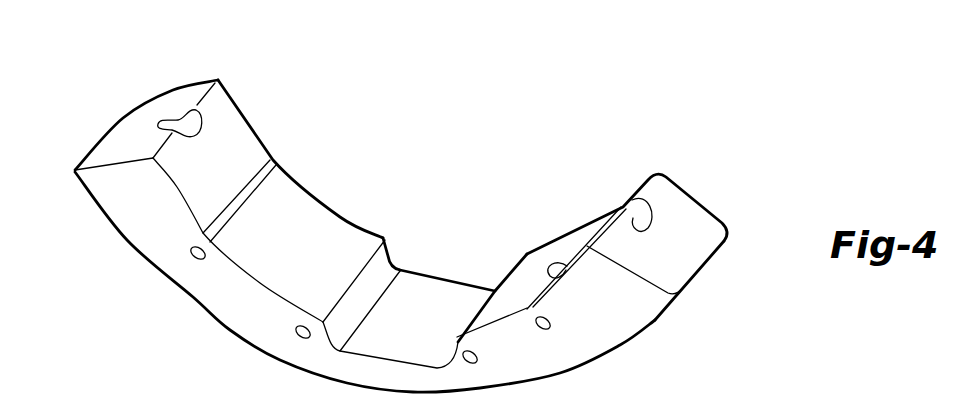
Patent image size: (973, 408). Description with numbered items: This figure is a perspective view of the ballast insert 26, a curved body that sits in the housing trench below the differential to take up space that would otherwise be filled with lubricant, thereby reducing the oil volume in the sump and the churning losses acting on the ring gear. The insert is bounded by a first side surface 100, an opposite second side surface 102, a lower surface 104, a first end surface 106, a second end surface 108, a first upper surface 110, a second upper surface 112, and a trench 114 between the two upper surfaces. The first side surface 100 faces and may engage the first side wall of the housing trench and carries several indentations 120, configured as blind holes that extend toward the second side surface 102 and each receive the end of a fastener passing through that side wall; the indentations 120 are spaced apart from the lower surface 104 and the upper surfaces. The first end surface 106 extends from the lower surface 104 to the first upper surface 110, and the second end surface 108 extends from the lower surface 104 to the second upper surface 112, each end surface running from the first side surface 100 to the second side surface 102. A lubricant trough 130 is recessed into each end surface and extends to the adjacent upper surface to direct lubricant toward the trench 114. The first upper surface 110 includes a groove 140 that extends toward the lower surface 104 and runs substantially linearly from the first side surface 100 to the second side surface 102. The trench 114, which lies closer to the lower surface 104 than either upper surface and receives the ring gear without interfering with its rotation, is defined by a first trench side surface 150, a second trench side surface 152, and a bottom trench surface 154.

The ballast insert 26 is at (425, 137).
The first side surface 100 is at (270, 330).
The second side surface 102 is at (345, 214).
The lower surface 104 is at (731, 298).
The first end surface 106 is at (130, 130).
The second end surface 108 is at (678, 203).
The first upper surface 110 is at (293, 204).
The second upper surface 112 is at (595, 302).
The trench 114 is at (431, 266).
The indentations 120 is at (298, 327).
The lubricant trough 130 is at (184, 121).
The groove 140 is at (270, 167).
The first trench side surface 150 is at (390, 263).
The second trench side surface 152 is at (455, 346).
The bottom trench surface 154 is at (443, 293).